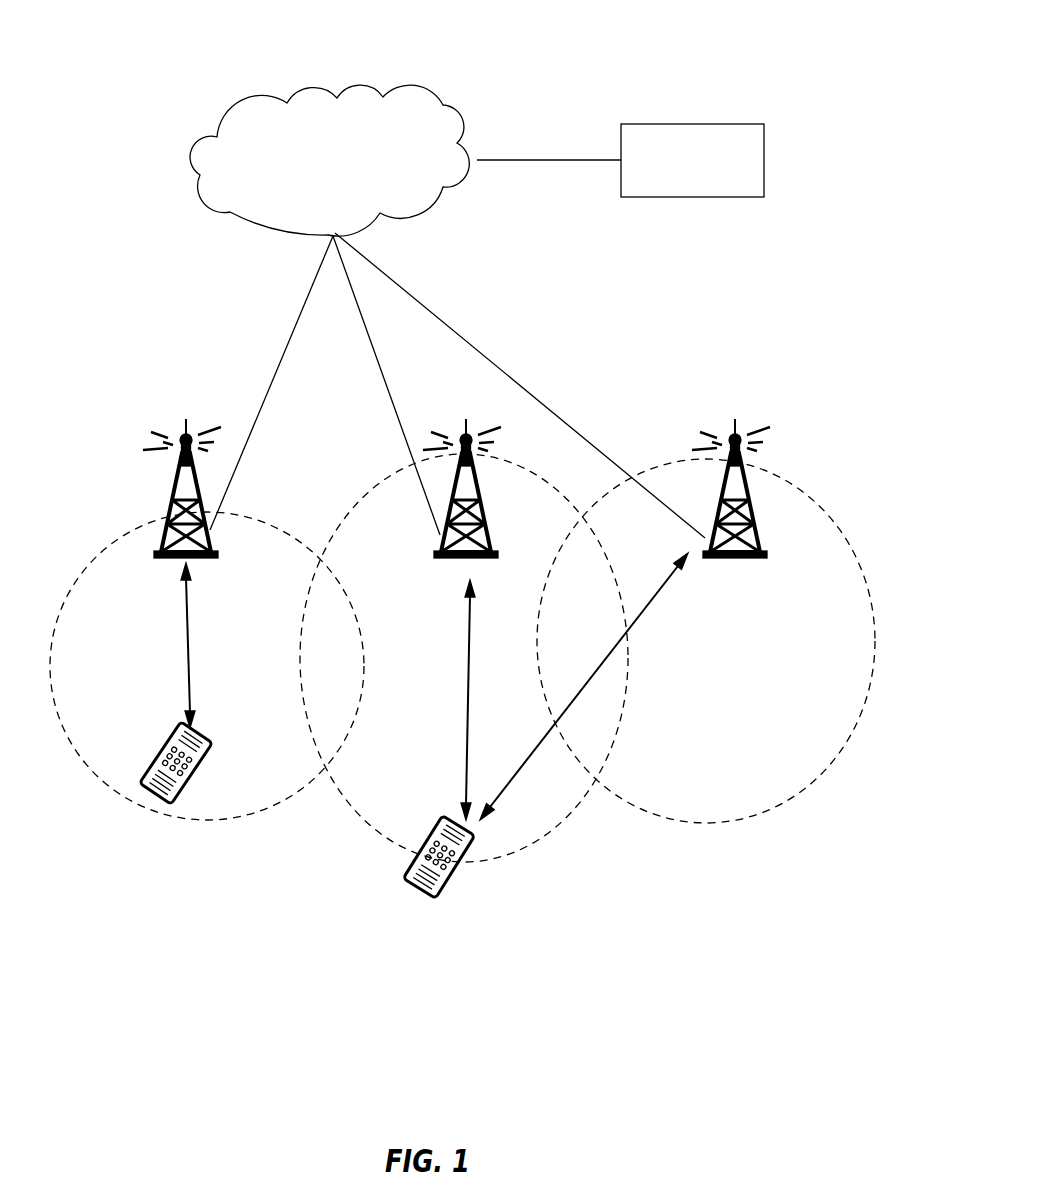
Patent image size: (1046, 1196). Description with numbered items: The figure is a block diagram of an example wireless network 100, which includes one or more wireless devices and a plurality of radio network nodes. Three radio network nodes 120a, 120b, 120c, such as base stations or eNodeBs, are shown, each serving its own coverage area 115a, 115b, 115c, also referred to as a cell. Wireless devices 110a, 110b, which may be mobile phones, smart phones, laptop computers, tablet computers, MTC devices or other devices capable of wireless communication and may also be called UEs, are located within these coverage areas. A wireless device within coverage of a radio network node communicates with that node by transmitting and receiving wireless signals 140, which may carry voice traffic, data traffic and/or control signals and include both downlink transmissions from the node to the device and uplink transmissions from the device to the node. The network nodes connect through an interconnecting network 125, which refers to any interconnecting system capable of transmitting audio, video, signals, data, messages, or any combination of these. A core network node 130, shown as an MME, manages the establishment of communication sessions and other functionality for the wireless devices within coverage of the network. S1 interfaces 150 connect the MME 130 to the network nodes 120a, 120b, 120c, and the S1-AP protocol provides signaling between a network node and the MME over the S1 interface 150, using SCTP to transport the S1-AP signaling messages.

The wireless network 100 is at (488, 75).
The interconnecting network 125 is at (315, 201).
The core network node 130 is at (675, 189).
The S1 interface 150 is at (457, 338).
The network node 120a is at (172, 514).
The network node 120b is at (534, 490).
The network node 120c is at (757, 536).
The coverage area 115a is at (207, 666).
The coverage area 115b is at (464, 658).
The coverage area 115c is at (706, 641).
The wireless device 110a is at (143, 790).
The wireless device 110b is at (467, 860).
The wireless signals 140 is at (418, 686).